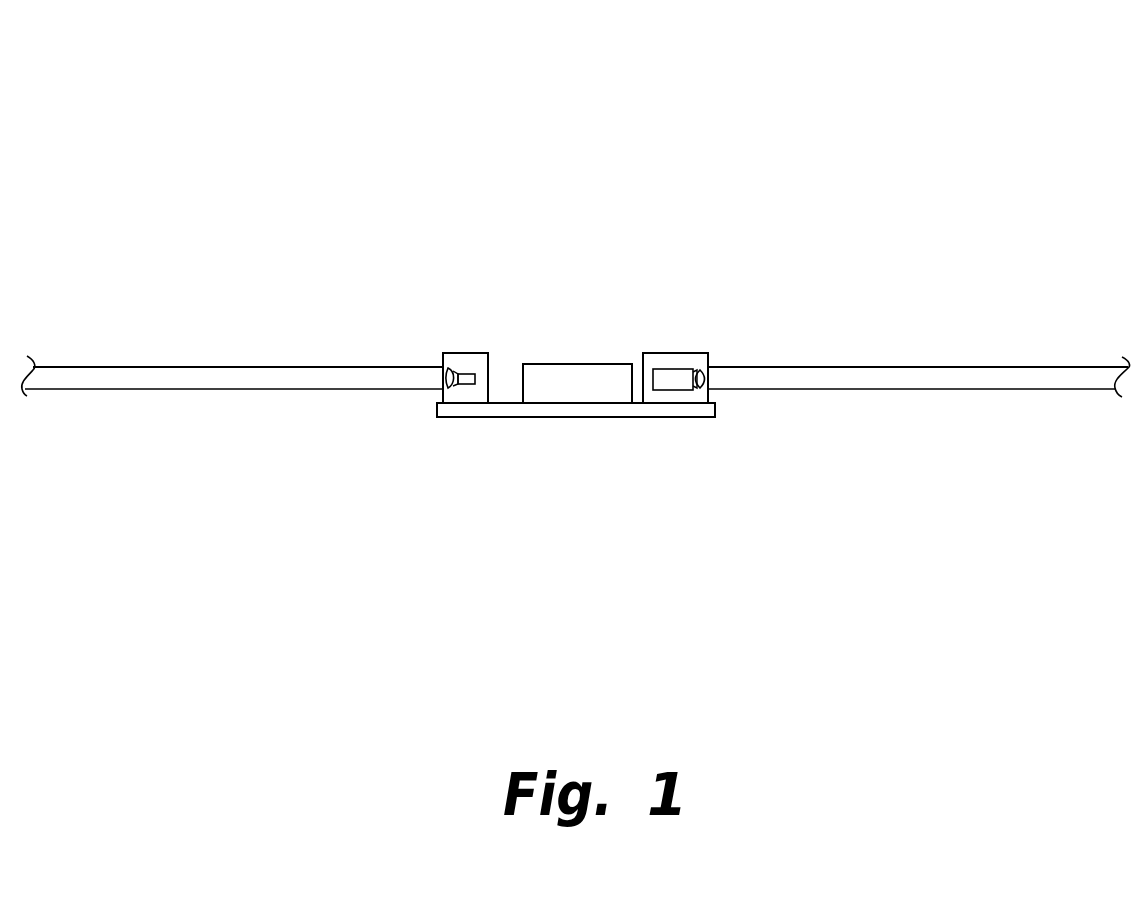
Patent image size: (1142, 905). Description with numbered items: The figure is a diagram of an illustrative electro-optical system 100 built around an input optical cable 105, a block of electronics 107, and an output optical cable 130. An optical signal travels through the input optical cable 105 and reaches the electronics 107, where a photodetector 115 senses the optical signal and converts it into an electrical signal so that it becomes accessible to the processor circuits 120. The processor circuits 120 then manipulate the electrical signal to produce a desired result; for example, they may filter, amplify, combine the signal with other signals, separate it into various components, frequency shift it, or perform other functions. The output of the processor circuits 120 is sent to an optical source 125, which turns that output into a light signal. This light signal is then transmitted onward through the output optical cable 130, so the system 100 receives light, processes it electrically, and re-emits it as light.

The electro-optical system 100 is at (134, 88).
The input optical cable 105 is at (241, 373).
The electronics 107 is at (720, 210).
The photodetector 115 is at (467, 352).
The processor circuits 120 is at (568, 362).
The optical source 125 is at (695, 356).
The output optical cable 130 is at (989, 381).